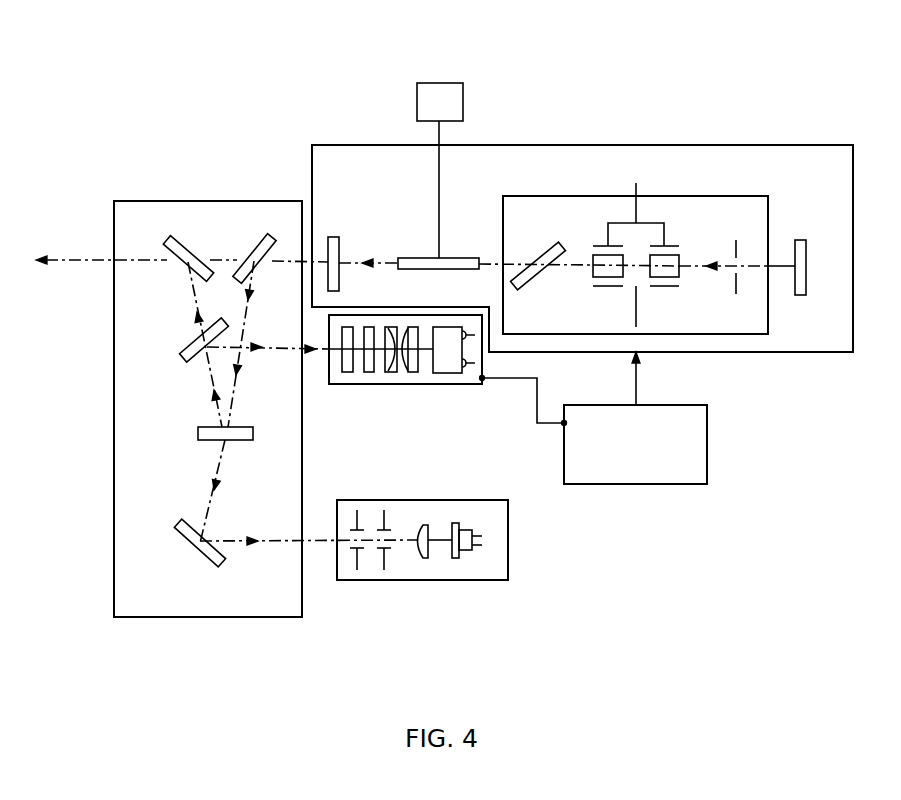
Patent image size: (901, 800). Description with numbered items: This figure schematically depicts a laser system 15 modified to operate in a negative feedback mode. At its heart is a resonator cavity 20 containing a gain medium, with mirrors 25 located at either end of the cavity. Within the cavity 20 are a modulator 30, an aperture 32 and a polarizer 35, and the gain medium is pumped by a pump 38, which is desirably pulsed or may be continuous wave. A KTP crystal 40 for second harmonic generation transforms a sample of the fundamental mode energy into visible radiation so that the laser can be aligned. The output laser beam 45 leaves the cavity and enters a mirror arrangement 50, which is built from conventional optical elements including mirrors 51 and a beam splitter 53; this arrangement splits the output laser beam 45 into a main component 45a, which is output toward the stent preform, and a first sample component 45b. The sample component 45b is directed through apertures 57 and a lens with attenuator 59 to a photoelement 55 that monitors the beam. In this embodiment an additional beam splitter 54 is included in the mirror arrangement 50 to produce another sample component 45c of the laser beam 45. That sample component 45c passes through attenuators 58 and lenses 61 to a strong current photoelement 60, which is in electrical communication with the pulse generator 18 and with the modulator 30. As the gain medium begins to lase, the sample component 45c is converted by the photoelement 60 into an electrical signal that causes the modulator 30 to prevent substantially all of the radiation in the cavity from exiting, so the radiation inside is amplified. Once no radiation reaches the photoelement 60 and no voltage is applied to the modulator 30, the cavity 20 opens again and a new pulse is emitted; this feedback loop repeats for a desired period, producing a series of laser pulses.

The laser system 15 is at (181, 42).
The pulse generator 18 is at (666, 485).
The resonator cavity 20 is at (476, 145).
The mirrors 25 is at (341, 246).
The modulator 30 is at (648, 222).
The aperture 32 is at (748, 244).
The polarizer 35 is at (541, 252).
The pump 38 is at (457, 117).
The KTP crystal 40 is at (446, 256).
The output laser beam 45 is at (283, 260).
The main component 45a is at (50, 258).
The first sample component 45b is at (334, 546).
The sample component 45c is at (296, 352).
The mirror arrangement 50 is at (172, 200).
The mirrors 51 is at (196, 244).
The beam splitter 53 is at (204, 425).
The additional beam splitter 54 is at (196, 340).
The photoelement 55 is at (463, 556).
The apertures 57 is at (356, 510).
The attenuators 58 is at (368, 374).
The lens with attenuator 59 is at (430, 524).
The strong current photoelement 60 is at (448, 376).
The lenses 61 is at (410, 374).